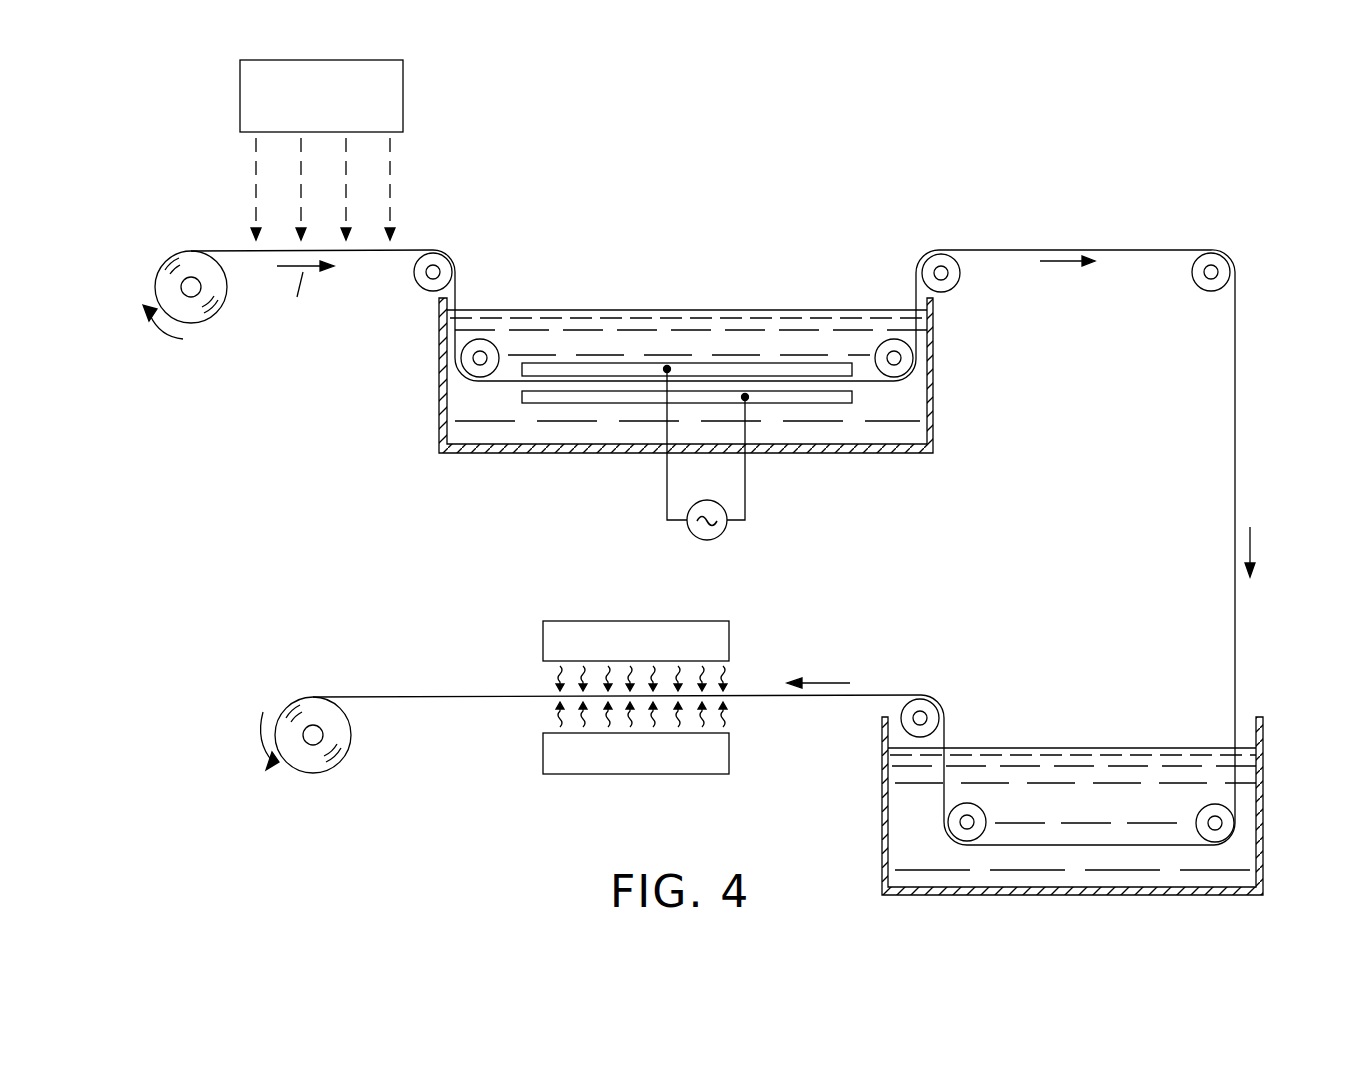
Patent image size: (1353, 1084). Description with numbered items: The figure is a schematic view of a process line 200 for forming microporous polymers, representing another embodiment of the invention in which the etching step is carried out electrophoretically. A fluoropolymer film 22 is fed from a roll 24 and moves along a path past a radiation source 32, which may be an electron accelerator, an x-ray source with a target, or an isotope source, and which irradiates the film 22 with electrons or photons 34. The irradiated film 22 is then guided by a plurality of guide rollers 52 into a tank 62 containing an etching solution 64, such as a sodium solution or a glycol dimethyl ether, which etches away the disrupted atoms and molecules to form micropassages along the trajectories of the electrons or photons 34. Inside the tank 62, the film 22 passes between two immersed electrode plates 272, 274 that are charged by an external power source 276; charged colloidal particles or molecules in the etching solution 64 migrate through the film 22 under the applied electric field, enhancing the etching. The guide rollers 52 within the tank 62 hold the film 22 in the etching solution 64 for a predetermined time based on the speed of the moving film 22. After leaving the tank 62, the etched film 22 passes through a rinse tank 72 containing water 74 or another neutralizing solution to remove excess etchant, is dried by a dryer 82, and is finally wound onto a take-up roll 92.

The process line 200 is at (942, 130).
The fluoropolymer film 22 is at (228, 250).
The roll 24 is at (208, 314).
The radiation source 32 is at (240, 100).
The electrons or photons 34 is at (347, 187).
The guide rollers 52 is at (482, 348).
The tank 62 is at (440, 393).
The etching solution 64 is at (598, 320).
The rinse tank 72 is at (882, 793).
The water 74 is at (1058, 760).
The dryer 82 is at (623, 620).
The take-up roll 92 is at (330, 751).
The plate 272 is at (729, 367).
The plate 274 is at (797, 401).
The external power source 276 is at (721, 535).